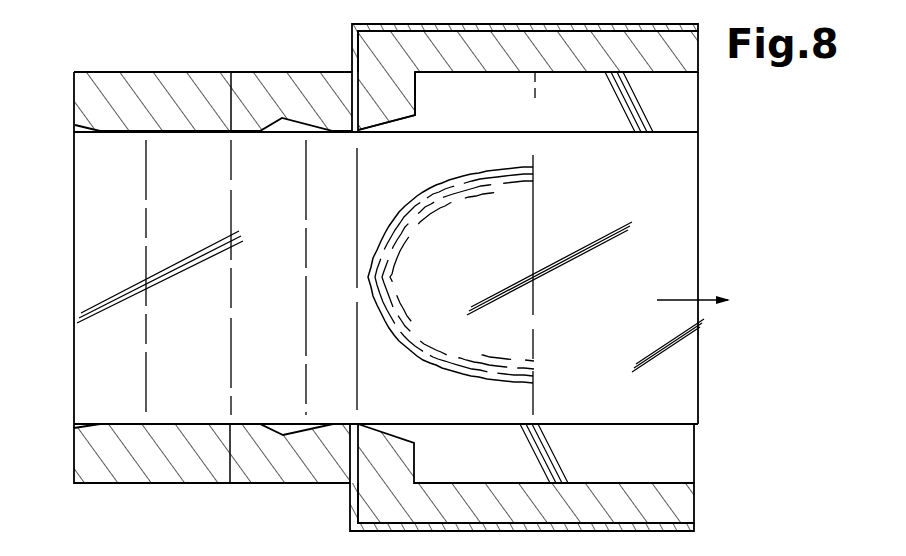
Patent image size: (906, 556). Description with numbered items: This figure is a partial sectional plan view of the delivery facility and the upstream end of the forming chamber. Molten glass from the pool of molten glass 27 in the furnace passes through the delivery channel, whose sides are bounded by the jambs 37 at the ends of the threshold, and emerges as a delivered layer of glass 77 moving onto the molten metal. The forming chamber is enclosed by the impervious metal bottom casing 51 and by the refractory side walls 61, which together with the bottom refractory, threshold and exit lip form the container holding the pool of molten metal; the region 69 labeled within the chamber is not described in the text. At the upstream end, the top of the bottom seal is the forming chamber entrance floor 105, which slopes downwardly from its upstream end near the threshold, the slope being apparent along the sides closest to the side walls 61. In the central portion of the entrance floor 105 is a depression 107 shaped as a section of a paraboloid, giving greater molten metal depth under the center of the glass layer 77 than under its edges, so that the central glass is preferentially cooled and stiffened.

The pool of molten glass 27 is at (118, 248).
The jambs 37 is at (300, 72).
The bottom casing 51 is at (632, 26).
The refractory side walls 61 is at (690, 60).
The chamber 69 is at (577, 115).
The delivered layer of glass 77 is at (657, 281).
The forming chamber entrance floor 105 is at (480, 85).
The depression 107 is at (400, 248).